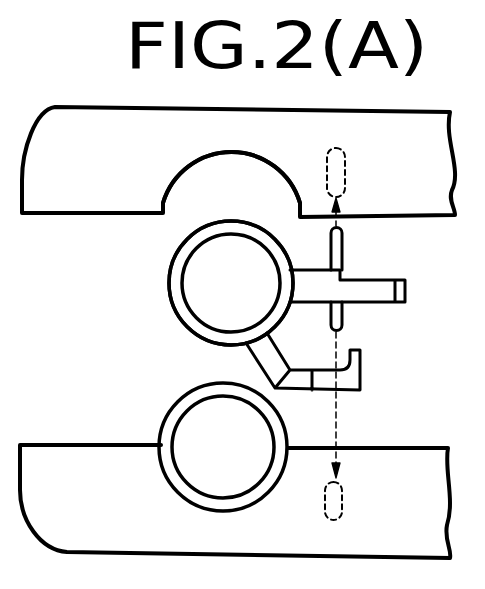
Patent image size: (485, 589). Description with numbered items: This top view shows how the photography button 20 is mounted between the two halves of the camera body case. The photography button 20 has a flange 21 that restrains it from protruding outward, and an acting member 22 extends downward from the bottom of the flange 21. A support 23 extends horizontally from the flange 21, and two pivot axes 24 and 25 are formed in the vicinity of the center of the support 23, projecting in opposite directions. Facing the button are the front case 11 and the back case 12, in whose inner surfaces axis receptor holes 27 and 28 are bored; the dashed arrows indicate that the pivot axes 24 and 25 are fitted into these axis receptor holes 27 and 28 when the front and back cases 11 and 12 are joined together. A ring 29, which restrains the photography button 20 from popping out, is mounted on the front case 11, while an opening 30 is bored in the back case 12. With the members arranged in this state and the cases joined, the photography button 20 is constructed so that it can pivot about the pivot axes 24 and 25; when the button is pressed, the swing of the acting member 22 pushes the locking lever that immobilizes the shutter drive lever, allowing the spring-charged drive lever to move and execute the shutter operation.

The front case 11 is at (36, 452).
The back case 12 is at (47, 208).
The photography button 20 is at (245, 301).
The flange 21 is at (184, 325).
The acting member 22 is at (364, 380).
The support 23 is at (372, 303).
The pivot axis 24 is at (343, 243).
The pivot axis 25 is at (343, 329).
The axis receptor hole 27 is at (346, 177).
The axis receptor hole 28 is at (343, 492).
The ring 29 is at (181, 399).
The opening 30 is at (192, 176).